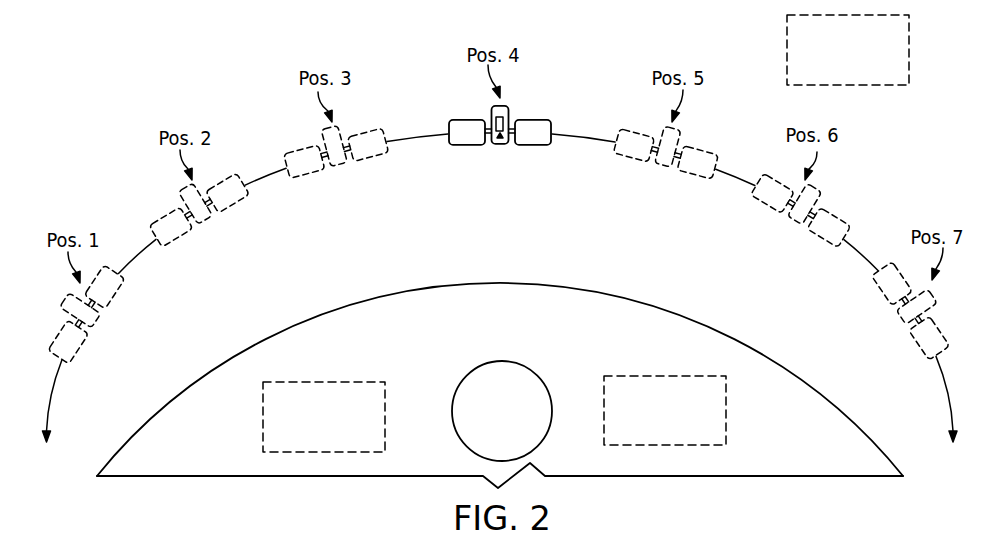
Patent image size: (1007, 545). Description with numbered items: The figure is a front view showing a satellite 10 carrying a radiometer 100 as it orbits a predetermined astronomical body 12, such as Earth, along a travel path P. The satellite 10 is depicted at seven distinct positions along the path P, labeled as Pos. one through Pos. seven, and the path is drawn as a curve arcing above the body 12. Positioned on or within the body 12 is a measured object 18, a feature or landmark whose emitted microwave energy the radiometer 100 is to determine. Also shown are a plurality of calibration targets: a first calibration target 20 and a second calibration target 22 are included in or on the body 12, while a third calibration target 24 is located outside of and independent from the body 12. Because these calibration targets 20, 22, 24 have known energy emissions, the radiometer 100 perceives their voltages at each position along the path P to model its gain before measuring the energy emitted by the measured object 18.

The satellite 10 is at (498, 245).
The radiometer 100 is at (95, 321).
The astronomical body 12 is at (306, 320).
The measured object 18 is at (540, 430).
The first calibration target 20 is at (366, 440).
The second calibration target 22 is at (708, 436).
The third calibration target 24 is at (890, 76).
The travel path P is at (264, 178).